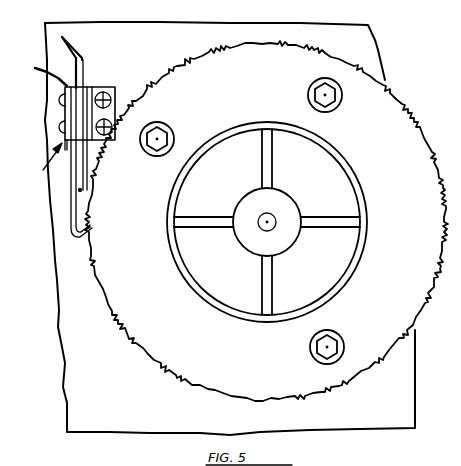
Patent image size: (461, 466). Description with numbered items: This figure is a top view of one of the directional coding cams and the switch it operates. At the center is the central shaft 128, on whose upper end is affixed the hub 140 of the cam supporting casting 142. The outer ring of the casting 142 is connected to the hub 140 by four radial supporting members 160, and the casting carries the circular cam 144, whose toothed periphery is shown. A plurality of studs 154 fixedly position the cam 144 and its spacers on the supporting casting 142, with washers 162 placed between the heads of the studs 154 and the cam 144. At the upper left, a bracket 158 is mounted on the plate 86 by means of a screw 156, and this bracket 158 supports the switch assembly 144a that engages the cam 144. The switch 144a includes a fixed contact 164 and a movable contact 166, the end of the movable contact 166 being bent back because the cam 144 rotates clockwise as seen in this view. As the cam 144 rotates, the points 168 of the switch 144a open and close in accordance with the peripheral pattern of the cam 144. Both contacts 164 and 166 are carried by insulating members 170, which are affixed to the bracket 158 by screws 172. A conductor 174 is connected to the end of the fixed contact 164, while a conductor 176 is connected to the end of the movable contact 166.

The plate 86 is at (402, 375).
The circular cam 144 is at (192, 369).
The switch 144a is at (42, 171).
The cam supporting casting 142 is at (357, 179).
The radial supporting members 160 is at (218, 217).
The hub 140 is at (247, 237).
The central shaft 128 is at (269, 214).
The washers 162 is at (146, 125).
The studs 154 is at (161, 137).
The screw 156 is at (112, 87).
The bracket 158 is at (98, 90).
The screws 172 is at (58, 127).
The insulating members 170 is at (77, 86).
The conductor 174 is at (66, 37).
The conductor 176 is at (35, 67).
The fixed contact 164 is at (83, 171).
The points 168 is at (96, 197).
The movable contact 166 is at (73, 221).